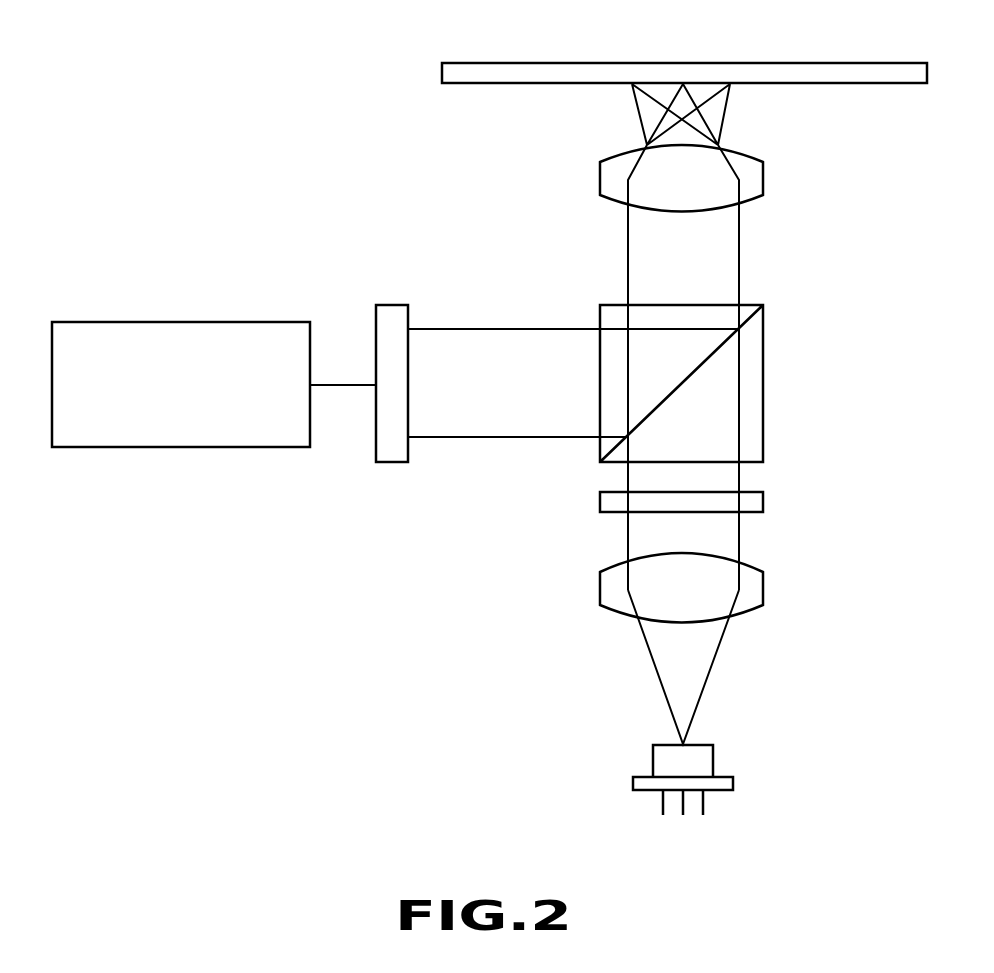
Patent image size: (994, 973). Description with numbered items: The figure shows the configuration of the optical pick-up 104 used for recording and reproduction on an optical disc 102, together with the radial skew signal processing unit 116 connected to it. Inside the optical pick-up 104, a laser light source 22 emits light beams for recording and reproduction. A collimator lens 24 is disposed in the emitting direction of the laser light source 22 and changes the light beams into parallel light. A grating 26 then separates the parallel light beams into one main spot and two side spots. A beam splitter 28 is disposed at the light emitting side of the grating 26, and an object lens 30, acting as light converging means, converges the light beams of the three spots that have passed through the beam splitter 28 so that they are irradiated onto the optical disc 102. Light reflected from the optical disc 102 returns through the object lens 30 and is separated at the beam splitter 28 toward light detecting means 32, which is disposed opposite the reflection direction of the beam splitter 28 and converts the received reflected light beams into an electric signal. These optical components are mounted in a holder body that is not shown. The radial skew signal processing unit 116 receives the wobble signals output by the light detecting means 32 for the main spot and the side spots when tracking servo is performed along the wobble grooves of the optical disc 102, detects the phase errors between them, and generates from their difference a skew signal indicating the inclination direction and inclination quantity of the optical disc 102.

The optical disc 102 is at (678, 63).
The optical pick-up 104 is at (852, 330).
The laser light source 22 is at (713, 752).
The collimator lens 24 is at (763, 578).
The grating 26 is at (763, 500).
The beam splitter 28 is at (763, 353).
The object lens 30 is at (763, 168).
The light detecting means 32 is at (392, 305).
The radial skew signal processing unit 116 is at (178, 322).